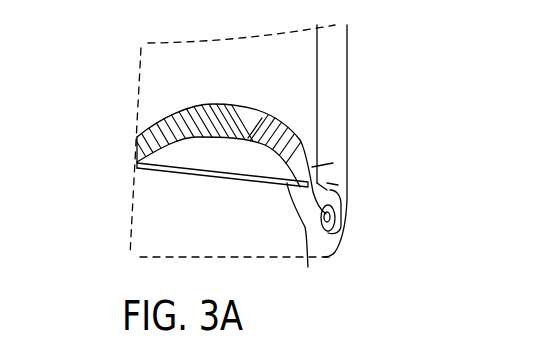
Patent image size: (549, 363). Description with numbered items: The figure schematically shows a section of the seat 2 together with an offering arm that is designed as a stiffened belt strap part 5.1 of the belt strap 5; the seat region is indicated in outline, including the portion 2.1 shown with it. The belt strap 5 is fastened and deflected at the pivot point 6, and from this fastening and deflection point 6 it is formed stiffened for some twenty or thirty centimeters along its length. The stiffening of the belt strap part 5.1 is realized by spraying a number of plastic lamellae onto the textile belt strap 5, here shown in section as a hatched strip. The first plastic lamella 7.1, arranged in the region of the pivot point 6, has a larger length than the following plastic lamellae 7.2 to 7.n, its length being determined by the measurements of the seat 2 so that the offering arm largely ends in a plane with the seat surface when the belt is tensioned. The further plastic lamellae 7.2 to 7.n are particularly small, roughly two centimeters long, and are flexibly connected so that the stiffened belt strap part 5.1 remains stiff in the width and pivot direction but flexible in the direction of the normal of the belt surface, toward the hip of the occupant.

The seat 2 is at (157, 212).
The housing wall section 2.1 is at (177, 70).
The belt strap 5 is at (151, 129).
The stiffened belt strap part 5.1 is at (323, 148).
The pivot point 6 is at (342, 225).
The plastic lamella 7.n is at (267, 113).
The first plastic lamella 7.1 is at (333, 163).
The plastic lamella 7.2 is at (323, 197).